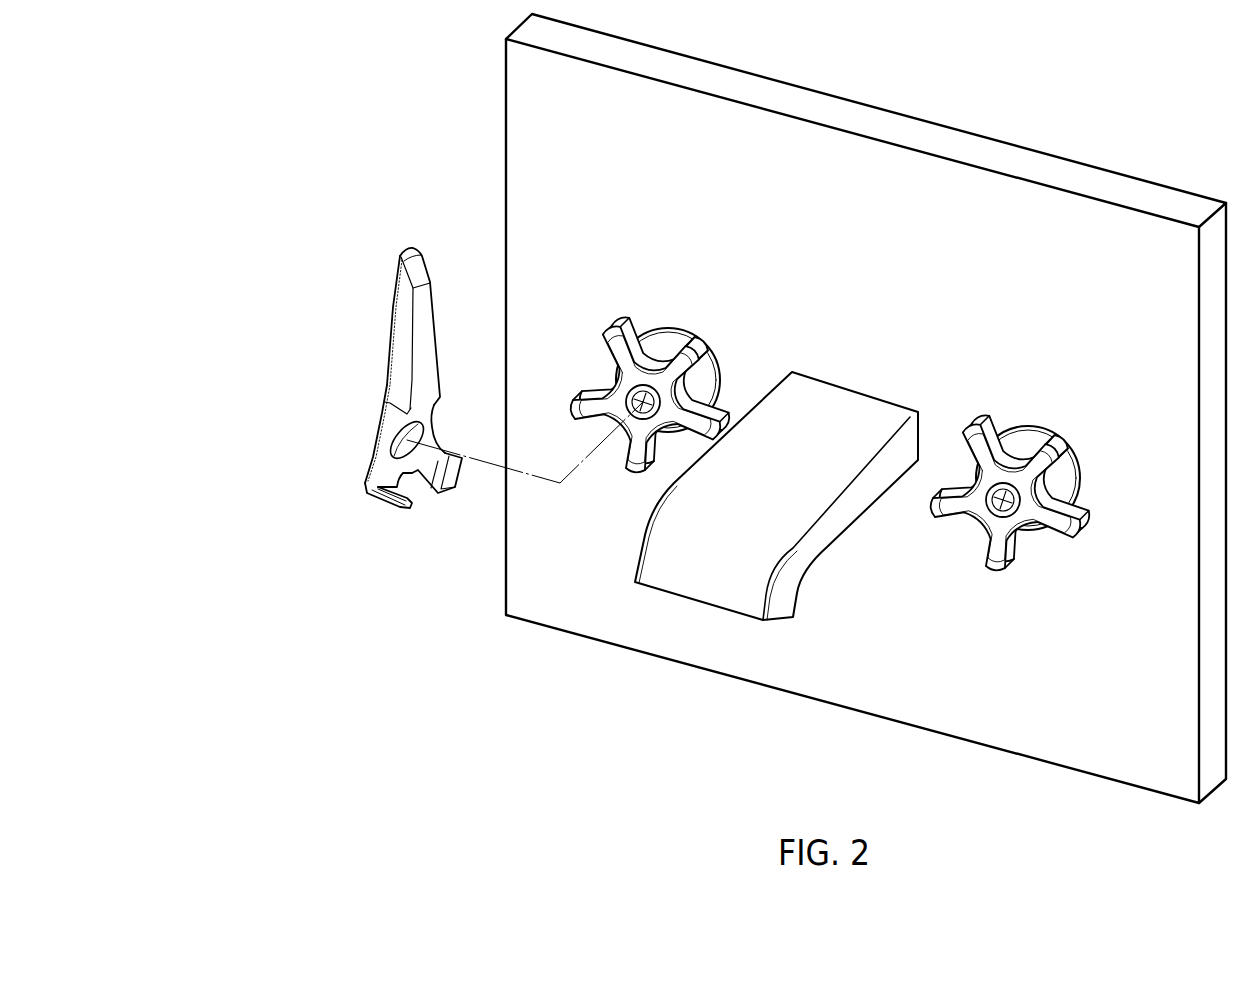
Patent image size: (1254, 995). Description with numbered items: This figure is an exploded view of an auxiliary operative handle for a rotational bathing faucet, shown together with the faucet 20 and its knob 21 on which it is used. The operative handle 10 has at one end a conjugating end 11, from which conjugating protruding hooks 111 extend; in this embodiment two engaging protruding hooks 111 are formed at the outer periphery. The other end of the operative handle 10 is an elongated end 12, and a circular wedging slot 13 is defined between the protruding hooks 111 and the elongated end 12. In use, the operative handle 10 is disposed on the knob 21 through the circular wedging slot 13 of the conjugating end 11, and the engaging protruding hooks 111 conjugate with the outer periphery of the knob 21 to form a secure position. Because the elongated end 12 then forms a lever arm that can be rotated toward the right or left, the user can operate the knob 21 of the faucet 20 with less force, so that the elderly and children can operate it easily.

The operative handle 10 is at (367, 385).
The conjugating end 11 is at (370, 438).
The elongated end 12 is at (405, 290).
The circular wedging slot 13 is at (430, 432).
The conjugating protruding hooks 111 is at (375, 494).
The faucet 20 is at (622, 552).
The knob 21 is at (690, 392).